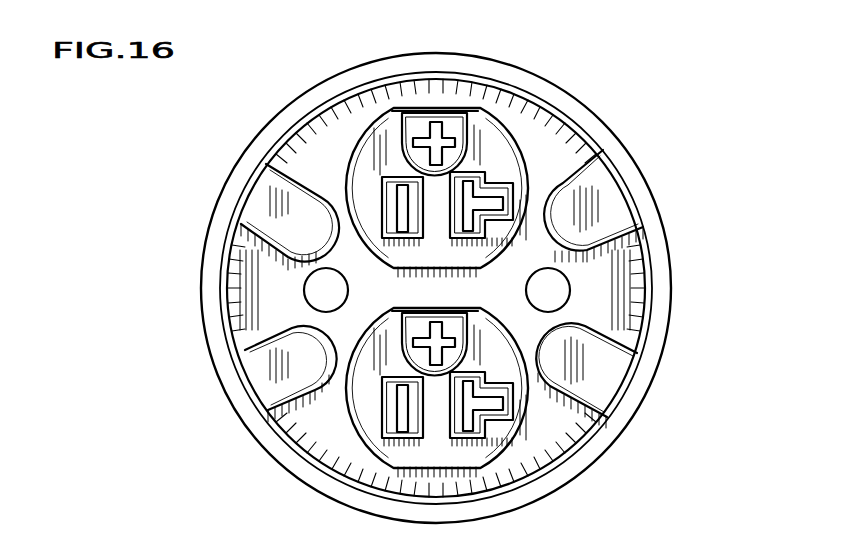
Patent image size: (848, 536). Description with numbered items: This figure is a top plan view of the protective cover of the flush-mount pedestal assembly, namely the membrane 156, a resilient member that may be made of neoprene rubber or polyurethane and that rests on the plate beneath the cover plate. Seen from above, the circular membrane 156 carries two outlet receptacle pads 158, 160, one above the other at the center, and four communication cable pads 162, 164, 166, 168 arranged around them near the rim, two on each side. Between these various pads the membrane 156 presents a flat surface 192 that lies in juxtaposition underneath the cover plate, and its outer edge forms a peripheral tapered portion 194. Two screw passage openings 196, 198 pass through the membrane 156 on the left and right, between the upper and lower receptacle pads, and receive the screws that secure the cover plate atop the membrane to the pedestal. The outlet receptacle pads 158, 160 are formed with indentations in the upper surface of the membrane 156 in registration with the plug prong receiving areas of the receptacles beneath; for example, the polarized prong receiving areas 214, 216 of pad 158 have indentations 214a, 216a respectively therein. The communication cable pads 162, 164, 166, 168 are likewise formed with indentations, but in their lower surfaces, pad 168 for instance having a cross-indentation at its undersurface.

The membrane 156 is at (655, 190).
The outlet receptacle pad 158 is at (482, 130).
The outlet receptacle pad 160 is at (494, 442).
The communication cable pad 162 is at (266, 372).
The communication cable pad 164 is at (266, 200).
The communication cable pad 166 is at (614, 217).
The communication cable pad 168 is at (608, 372).
The flat surface 192 is at (574, 158).
The peripheral tapered portion 194 is at (376, 72).
The screw passage opening 196 is at (317, 288).
The screw passage opening 198 is at (560, 293).
The polarized prong receiving area 214 is at (381, 184).
The indentation 214a is at (390, 207).
The polarized prong receiving area 216 is at (500, 178).
The indentation 216a is at (483, 179).